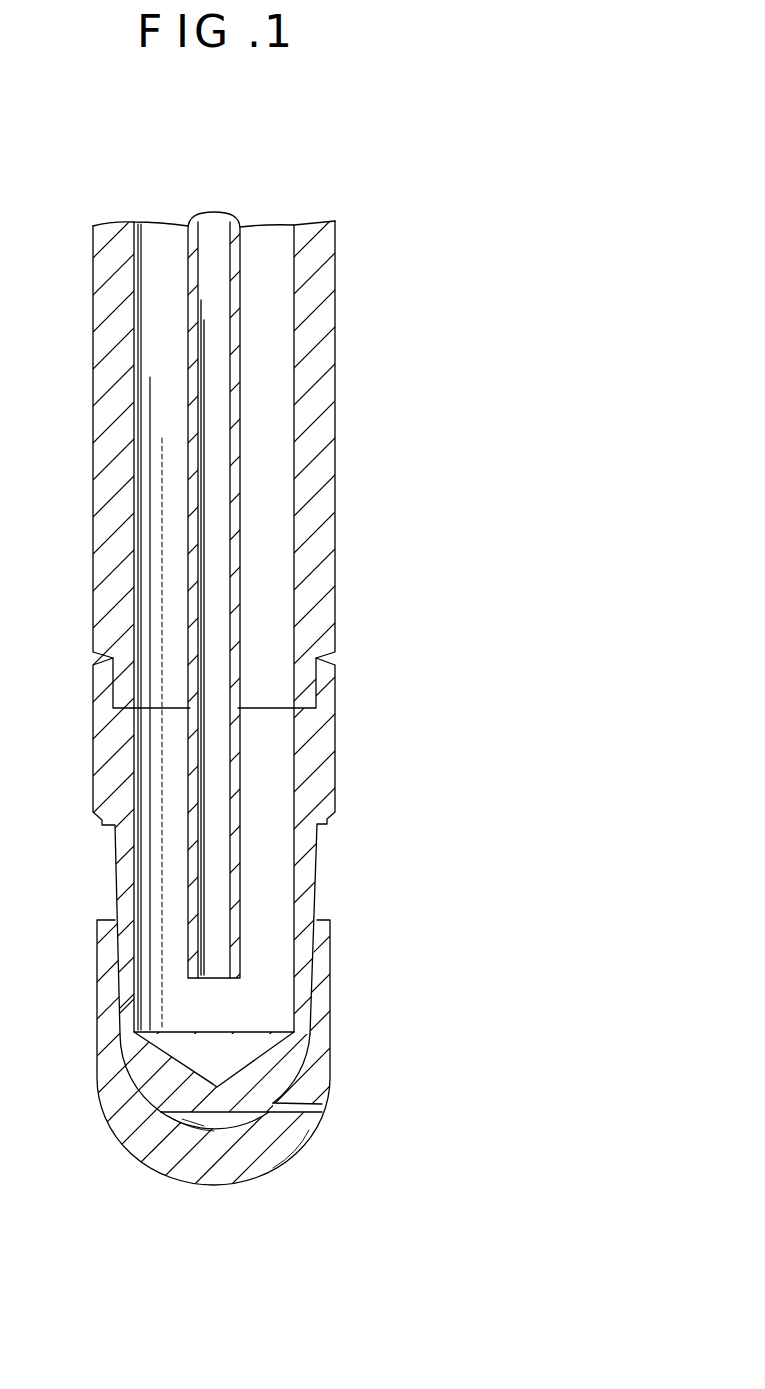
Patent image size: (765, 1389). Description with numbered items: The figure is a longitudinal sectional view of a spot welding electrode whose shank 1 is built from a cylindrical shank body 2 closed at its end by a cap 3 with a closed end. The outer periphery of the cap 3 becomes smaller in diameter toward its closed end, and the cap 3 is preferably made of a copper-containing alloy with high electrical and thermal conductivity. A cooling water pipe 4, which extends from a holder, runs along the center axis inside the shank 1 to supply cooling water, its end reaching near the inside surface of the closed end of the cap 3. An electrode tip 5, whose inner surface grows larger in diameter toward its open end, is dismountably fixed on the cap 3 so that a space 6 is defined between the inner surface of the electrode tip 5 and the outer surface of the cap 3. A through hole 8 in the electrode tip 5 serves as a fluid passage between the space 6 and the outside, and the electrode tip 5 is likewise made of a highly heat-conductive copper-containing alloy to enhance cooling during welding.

The shank 1 is at (338, 327).
The shank body 2 is at (335, 462).
The cap 3 is at (317, 858).
The cooling water pipe 4 is at (237, 260).
The electrode tip 5 is at (188, 1187).
The space 6 is at (227, 1120).
The through hole 8 is at (322, 1112).